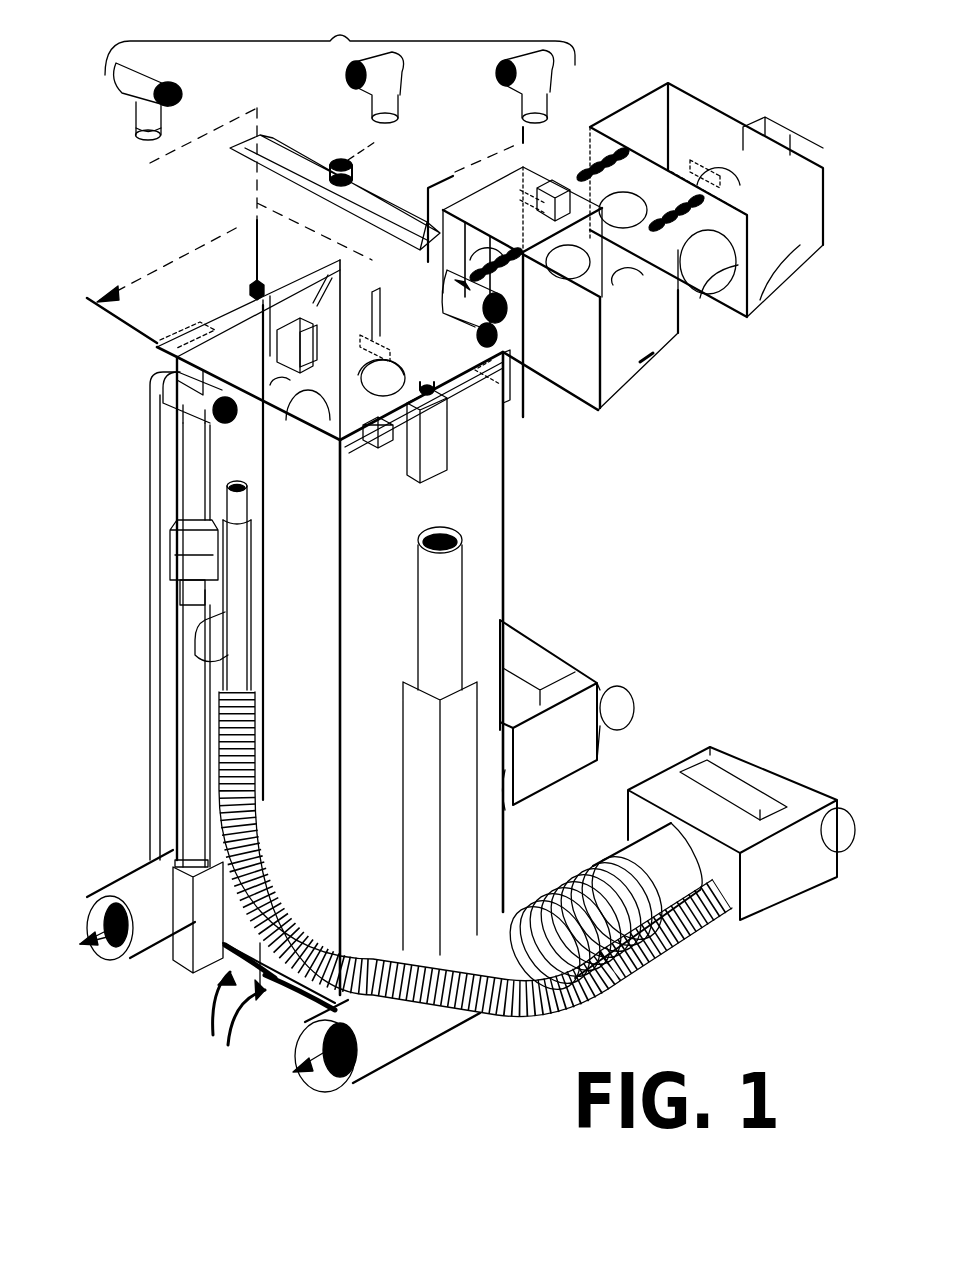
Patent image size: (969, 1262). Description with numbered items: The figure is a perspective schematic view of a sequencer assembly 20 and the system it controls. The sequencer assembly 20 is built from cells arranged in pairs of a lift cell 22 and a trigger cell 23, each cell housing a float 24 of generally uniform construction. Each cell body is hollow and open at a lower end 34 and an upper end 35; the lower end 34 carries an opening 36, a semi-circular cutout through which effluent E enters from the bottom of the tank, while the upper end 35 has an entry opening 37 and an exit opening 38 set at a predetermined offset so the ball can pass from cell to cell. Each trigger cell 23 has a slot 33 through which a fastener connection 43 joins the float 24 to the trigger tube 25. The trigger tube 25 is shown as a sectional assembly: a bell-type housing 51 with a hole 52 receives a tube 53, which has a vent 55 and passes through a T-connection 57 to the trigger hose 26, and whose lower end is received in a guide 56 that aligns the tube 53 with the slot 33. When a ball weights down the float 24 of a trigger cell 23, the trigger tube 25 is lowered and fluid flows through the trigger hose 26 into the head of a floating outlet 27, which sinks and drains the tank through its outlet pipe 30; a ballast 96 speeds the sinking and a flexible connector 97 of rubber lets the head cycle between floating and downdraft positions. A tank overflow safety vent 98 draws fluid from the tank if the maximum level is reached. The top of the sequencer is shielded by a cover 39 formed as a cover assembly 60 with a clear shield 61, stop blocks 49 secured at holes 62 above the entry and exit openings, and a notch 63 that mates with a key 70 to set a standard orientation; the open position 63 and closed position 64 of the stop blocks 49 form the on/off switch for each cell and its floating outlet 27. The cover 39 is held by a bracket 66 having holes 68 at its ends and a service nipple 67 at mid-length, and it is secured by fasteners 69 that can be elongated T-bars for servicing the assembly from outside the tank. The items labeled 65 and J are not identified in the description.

The sequencer assembly 20 is at (632, 518).
The lift cell 22 is at (688, 95).
The trigger cell 23 is at (555, 183).
The float 24 is at (222, 530).
The trigger tube 25 is at (775, 128).
The trigger hose 26 is at (260, 735).
The floating outlet 27 is at (578, 665).
The outlet pipe 30 is at (108, 958).
The slot 33 is at (467, 250).
The lower end 34 is at (228, 885).
The upper end 35 is at (348, 446).
The opening 36 is at (215, 990).
The entry opening 37 is at (718, 165).
The exit opening 38 is at (660, 195).
The cover 39 is at (155, 345).
The fastener connection 43 is at (215, 535).
The stop block 49 is at (695, 175).
The housing 51 is at (208, 568).
The hole 52 is at (250, 525).
The tube 53 is at (205, 595).
The vent 55 is at (250, 505).
The guide 56 is at (413, 888).
The T-connection 57 is at (240, 430).
The cover assembly 60 is at (345, 41).
The shield 61 is at (505, 400).
The hole 62 is at (285, 315).
The notch 63 is at (383, 448).
The closed position 64 is at (316, 336).
The rail 65 is at (420, 240).
The bracket 66 is at (283, 147).
The nipple 67 is at (353, 166).
The hole 68 is at (430, 215).
The fastener 69 is at (148, 140).
The key 70 is at (435, 450).
The ballast 96 is at (628, 712).
The flexible connector 97 is at (545, 895).
The tank overflow safety vent 98 is at (428, 652).
The effluent E is at (197, 1018).
The joint J is at (377, 129).